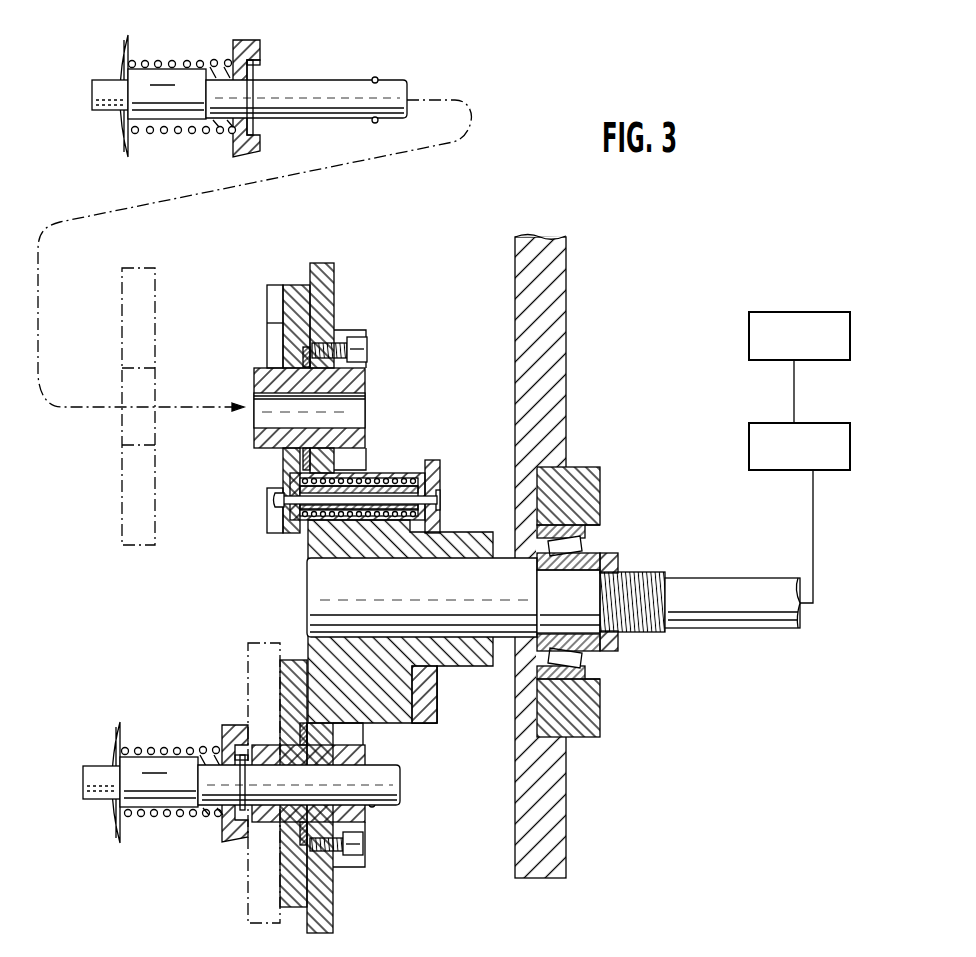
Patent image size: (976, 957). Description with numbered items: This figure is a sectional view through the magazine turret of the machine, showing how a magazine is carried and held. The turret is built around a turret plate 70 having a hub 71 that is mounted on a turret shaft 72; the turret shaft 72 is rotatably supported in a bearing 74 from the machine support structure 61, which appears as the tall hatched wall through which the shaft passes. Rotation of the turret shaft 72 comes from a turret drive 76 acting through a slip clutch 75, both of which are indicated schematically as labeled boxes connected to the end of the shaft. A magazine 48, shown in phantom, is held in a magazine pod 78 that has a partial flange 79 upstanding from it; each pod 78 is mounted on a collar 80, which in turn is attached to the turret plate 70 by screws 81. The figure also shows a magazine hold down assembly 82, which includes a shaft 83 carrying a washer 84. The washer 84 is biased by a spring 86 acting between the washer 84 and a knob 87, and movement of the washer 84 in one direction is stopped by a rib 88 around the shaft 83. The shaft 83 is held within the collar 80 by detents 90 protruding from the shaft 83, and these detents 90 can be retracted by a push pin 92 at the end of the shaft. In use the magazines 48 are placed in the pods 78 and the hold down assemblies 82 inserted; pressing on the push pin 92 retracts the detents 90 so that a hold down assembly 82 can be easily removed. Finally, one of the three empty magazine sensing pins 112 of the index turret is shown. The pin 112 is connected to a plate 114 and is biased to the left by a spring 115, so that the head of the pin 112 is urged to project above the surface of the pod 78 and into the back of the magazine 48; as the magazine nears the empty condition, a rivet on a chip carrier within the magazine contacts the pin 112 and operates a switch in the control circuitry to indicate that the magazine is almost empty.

The magazine 48 is at (157, 308).
The machine support structure 61 is at (566, 364).
The turret plate 70 is at (335, 275).
The hub 71 is at (457, 532).
The turret shaft 72 is at (312, 594).
The bearing 74 is at (621, 529).
The slip clutch 75 is at (749, 466).
The turret drive 76 is at (749, 356).
The magazine pod 78 is at (299, 285).
The partial flange 79 is at (266, 298).
The collar 80 is at (253, 385).
The screw 81 is at (368, 352).
The magazine hold down assembly 82 is at (203, 57).
The shaft 83 is at (309, 90).
The washer 84 is at (256, 154).
The spring 86 is at (196, 136).
The knob 87 is at (118, 149).
The rib 88 is at (254, 102).
The detent 90 is at (375, 77).
The push pin 92 is at (92, 100).
The empty magazine sensing pin 112 is at (275, 500).
The plate 114 is at (433, 462).
The spring 115 is at (397, 472).